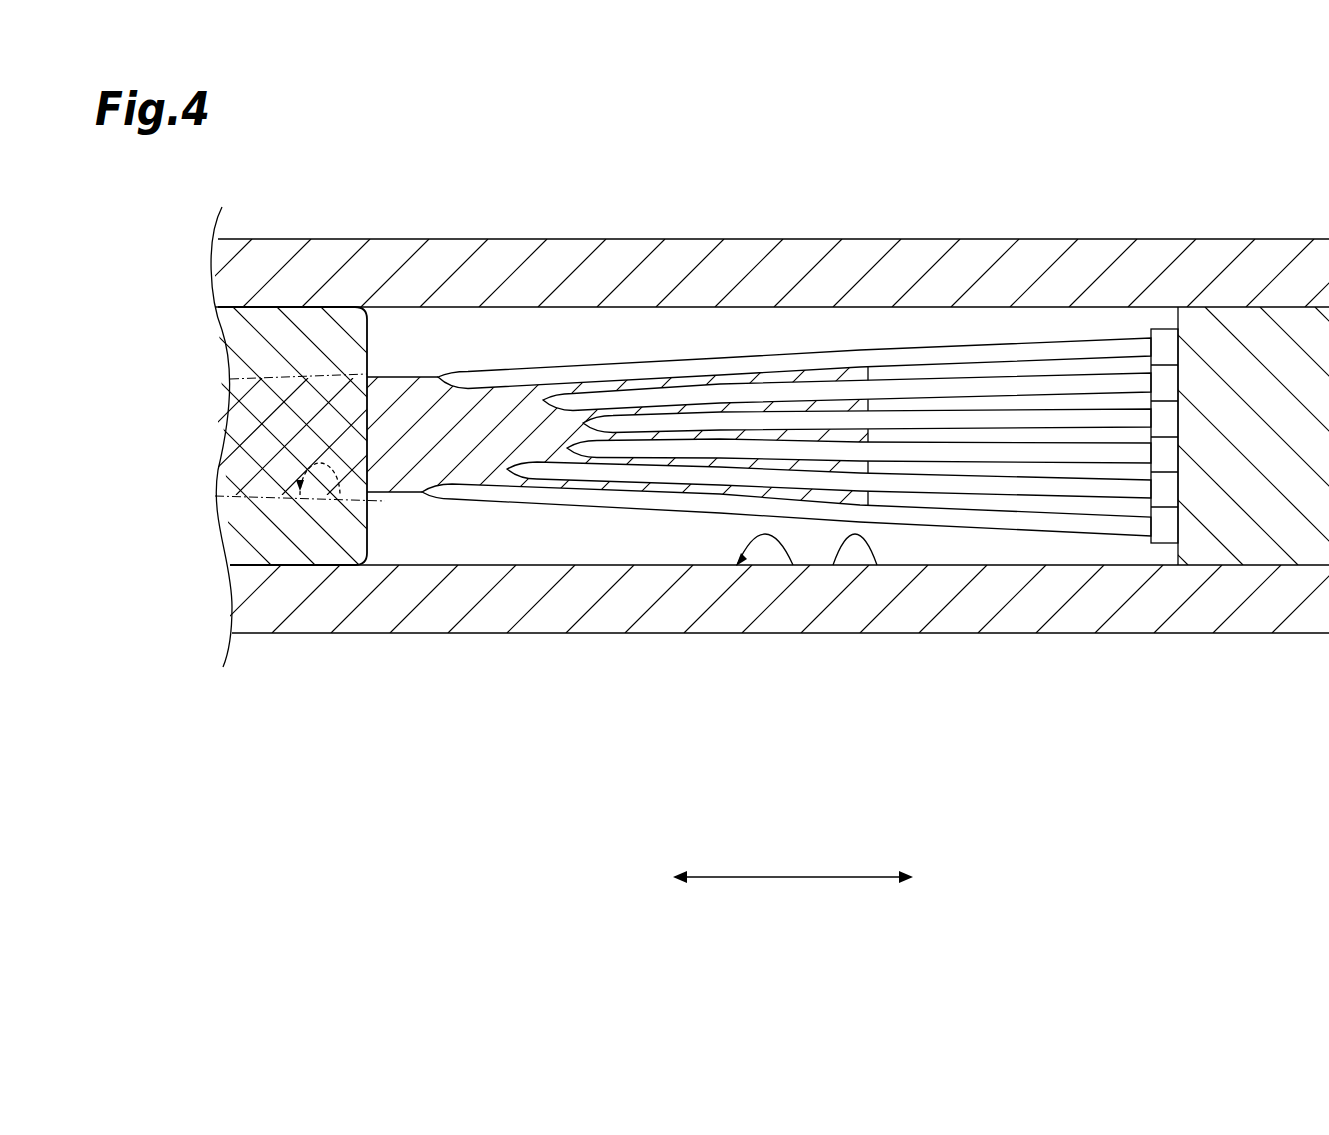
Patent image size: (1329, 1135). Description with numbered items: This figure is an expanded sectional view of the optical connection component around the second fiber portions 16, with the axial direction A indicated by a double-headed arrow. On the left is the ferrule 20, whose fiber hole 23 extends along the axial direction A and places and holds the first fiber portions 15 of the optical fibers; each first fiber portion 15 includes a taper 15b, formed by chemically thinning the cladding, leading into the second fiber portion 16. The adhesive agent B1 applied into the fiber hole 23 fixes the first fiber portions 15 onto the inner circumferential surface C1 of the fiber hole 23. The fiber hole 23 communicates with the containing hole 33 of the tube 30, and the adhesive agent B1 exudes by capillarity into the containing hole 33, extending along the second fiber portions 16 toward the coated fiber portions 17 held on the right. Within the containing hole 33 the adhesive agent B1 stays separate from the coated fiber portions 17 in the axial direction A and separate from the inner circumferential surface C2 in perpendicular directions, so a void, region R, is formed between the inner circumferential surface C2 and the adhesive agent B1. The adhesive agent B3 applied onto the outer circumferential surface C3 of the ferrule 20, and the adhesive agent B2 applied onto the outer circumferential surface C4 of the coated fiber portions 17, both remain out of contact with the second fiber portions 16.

The region R is at (561, 338).
The second fiber portion 16 is at (973, 418).
The coated fiber portion 17 is at (1170, 417).
The adhesive agent B3 is at (240, 341).
The first fiber portion 15 is at (311, 436).
The taper 15b is at (245, 431).
The outer circumferential surface C3 is at (250, 567).
The ferrule 20 is at (297, 580).
The fiber hole 23 is at (340, 497).
The inner circumferential surface C1 is at (367, 470).
The adhesive agent B1 is at (485, 433).
The tube 30 is at (699, 640).
The containing hole 33 is at (793, 565).
The inner circumferential surface C2 is at (877, 565).
The adhesive agent B2 is at (1252, 433).
The outer circumferential surface C4 is at (1290, 568).
The axial direction A is at (800, 877).